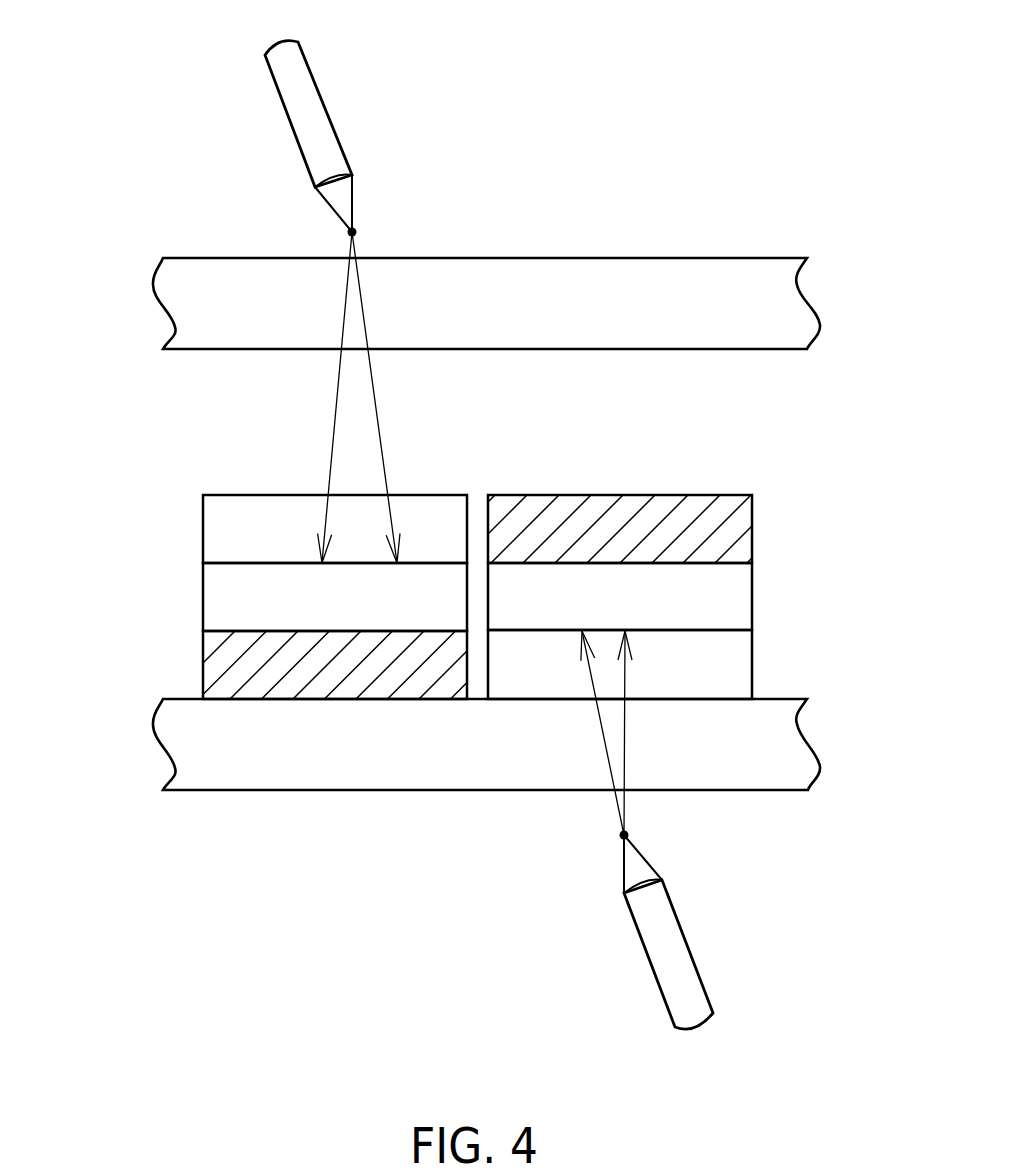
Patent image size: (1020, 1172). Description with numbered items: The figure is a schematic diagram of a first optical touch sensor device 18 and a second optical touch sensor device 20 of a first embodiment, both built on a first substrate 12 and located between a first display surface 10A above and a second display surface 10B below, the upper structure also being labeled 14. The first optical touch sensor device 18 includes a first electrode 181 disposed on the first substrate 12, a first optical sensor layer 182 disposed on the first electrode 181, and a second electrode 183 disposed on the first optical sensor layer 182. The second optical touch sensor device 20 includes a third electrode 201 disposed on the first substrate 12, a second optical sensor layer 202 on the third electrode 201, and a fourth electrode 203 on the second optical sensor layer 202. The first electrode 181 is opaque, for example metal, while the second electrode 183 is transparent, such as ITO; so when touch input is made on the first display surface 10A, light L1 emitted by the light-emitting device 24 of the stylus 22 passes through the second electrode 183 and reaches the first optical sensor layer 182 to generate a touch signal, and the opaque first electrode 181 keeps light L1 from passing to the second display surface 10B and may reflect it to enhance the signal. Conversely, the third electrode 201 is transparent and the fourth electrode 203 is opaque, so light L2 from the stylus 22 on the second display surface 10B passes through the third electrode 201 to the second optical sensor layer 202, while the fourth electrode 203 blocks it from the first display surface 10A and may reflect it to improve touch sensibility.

The first display surface 10A is at (486, 259).
The upper substrate 14 is at (727, 320).
The second display surface 10B is at (486, 789).
The first substrate 12 is at (486, 744).
The first optical touch sensor device 18 is at (283, 597).
The first electrode 181 is at (315, 665).
The first optical sensor layer 182 is at (222, 596).
The second electrode 183 is at (222, 528).
The second optical touch sensor device 20 is at (668, 597).
The third electrode 201 is at (666, 664).
The second optical sensor layer 202 is at (733, 596).
The fourth electrode 203 is at (733, 527).
The stylus 22 is at (330, 105).
The light-emitting device 24 is at (357, 228).
The light L1 is at (332, 445).
The light L2 is at (607, 765).